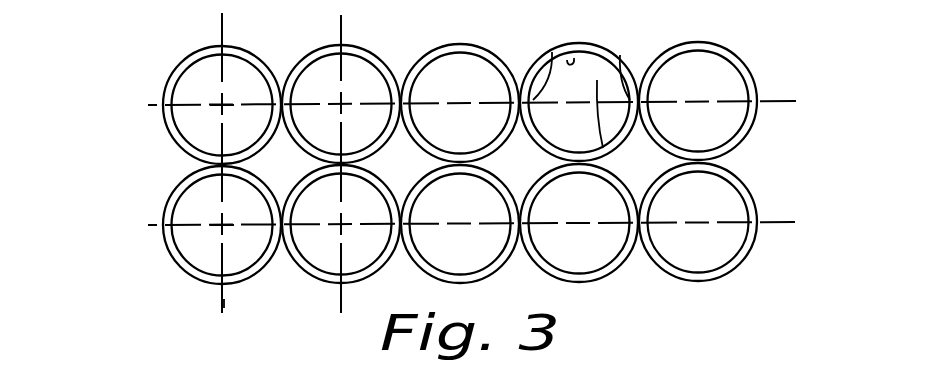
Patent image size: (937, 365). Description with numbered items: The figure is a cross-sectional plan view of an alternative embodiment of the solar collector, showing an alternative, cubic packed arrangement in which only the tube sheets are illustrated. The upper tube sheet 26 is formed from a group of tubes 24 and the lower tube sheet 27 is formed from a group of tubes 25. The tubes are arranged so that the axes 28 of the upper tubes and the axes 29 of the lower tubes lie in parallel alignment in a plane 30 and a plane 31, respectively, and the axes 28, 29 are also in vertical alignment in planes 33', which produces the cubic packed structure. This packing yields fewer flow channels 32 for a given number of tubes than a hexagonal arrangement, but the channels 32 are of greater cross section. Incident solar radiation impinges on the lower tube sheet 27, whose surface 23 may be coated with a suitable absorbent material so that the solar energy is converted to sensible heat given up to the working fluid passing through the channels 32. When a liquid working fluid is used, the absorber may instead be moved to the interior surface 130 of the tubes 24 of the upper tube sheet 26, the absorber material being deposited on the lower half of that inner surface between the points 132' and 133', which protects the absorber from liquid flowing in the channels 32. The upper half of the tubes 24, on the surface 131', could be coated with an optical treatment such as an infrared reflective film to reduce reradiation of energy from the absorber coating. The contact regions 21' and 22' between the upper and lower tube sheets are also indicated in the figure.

The contact line between upper and lower tubes 21' is at (166, 163).
The contact line between upper and lower tubes 22' is at (755, 160).
The surface of the lower tube sheet 23 is at (482, 167).
The tubes 24 is at (298, 58).
The tubes 25 is at (198, 280).
The tube sheet 26 is at (168, 78).
The tube sheet 27 is at (166, 213).
The axes 28 is at (222, 104).
The axes 29 is at (222, 226).
The plane 30 is at (776, 97).
The plane 31 is at (777, 221).
The flow channels 32 is at (268, 176).
The planes 33' is at (282, 304).
The interior surface 130 is at (597, 80).
The surface 131' is at (570, 32).
The point 132' is at (512, 55).
The point 133' is at (657, 54).